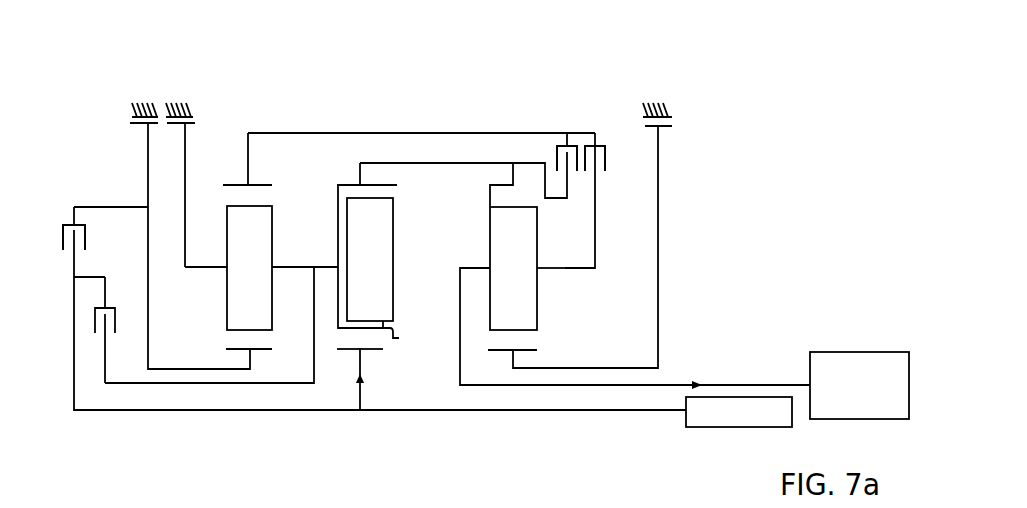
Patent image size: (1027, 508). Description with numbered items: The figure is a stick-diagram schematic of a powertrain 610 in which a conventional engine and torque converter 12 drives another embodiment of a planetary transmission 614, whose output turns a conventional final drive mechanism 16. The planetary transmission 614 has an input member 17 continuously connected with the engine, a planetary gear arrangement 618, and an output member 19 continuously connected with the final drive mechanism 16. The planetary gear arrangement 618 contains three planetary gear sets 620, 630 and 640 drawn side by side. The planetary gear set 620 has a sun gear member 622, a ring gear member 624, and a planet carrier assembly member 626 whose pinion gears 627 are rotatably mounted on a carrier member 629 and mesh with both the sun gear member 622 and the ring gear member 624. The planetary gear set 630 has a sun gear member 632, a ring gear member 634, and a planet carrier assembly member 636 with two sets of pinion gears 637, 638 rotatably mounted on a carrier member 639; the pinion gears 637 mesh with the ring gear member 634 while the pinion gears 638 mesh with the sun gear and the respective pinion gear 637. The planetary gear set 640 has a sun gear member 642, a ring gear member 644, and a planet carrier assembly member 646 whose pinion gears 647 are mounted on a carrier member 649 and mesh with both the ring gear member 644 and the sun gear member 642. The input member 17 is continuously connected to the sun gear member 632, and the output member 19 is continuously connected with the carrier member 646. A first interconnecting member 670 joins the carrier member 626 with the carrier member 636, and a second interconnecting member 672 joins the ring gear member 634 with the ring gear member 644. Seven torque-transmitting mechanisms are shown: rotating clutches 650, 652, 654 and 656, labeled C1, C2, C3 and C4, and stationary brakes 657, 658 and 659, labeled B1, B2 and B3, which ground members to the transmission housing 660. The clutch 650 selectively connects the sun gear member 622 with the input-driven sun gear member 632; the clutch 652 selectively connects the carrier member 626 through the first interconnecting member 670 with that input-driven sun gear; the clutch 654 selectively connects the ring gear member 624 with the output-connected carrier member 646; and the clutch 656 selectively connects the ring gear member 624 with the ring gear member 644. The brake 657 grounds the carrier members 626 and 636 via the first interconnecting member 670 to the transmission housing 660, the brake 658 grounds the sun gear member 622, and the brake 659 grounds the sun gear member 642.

The engine and torque converter 12 is at (752, 427).
The final drive mechanism 16 is at (868, 352).
The input member 17 is at (597, 411).
The output member 19 is at (670, 384).
The powertrain 610 is at (514, 68).
The planetary transmission 614 is at (571, 72).
The planetary gear arrangement 618 is at (262, 76).
The planetary gear set 620 is at (244, 353).
The sun gear member 622 is at (258, 351).
The ring gear member 624 is at (245, 185).
The planet carrier assembly member 626 is at (220, 262).
The pinion gears 627 is at (249, 268).
The carrier member 629 is at (203, 268).
The planetary gear set 630 is at (356, 354).
The sun gear member 632 is at (364, 353).
The ring gear member 634 is at (396, 190).
The planet carrier assembly member 636 is at (330, 261).
The pinion gears 637 is at (370, 259).
The pinion gears 638 is at (411, 341).
The carrier member 639 is at (320, 265).
The planetary gear set 640 is at (508, 354).
The sun gear member 642 is at (520, 351).
The ring gear member 644 is at (500, 187).
The planet carrier assembly member 646 is at (541, 273).
The pinion gears 647 is at (513, 268).
The carrier member 649 is at (565, 270).
The clutch 650 is at (79, 252).
The clutch 652 is at (102, 336).
The clutch 654 is at (600, 177).
The clutch 656 is at (573, 177).
The brake 657 is at (198, 124).
The brake 658 is at (131, 124).
The brake 659 is at (674, 127).
The transmission housing 660 is at (193, 103).
The first interconnecting member 670 is at (292, 268).
The second interconnecting member 672 is at (455, 163).
The brake B1 is at (199, 113).
The brake B2 is at (127, 113).
The brake B3 is at (674, 118).
The clutch C1 is at (95, 242).
The clutch C2 is at (116, 321).
The clutch C3 is at (611, 157).
The clutch C4 is at (566, 141).